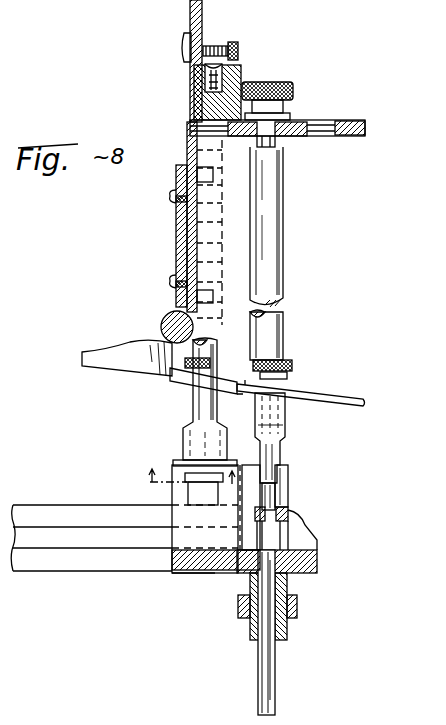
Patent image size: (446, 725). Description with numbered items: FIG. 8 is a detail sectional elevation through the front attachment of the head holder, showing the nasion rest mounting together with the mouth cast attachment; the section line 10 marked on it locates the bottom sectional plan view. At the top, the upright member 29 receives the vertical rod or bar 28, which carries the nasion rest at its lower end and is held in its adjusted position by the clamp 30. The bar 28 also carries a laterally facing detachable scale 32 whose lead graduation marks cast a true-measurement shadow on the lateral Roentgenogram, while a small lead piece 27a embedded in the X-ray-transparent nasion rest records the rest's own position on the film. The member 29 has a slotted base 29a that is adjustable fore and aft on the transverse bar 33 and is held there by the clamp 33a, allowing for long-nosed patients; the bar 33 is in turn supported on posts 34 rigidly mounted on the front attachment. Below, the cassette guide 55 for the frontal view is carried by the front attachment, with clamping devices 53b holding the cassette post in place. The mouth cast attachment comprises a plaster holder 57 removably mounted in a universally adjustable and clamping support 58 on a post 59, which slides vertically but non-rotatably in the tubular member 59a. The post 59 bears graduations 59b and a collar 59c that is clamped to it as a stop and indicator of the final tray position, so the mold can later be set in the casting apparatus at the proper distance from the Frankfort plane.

The member 29 is at (203, 27).
The clamp 30 is at (237, 44).
The clamp 33a is at (265, 82).
The slotted base 29a is at (340, 120).
The transverse bar 33 is at (303, 137).
The posts 34 is at (270, 234).
The detachable scale 32 is at (175, 238).
The rod or bar 28 is at (176, 310).
The lead piece 27a is at (160, 327).
The plaster holder 57 is at (128, 370).
The universally adjustable and clamping support 58 is at (287, 383).
The clamping devices 53b is at (187, 474).
The post 59 is at (280, 456).
The graduations 59b is at (283, 494).
The collar 59c is at (253, 512).
The tubular member 59a is at (317, 557).
The guide 55 is at (182, 490).
The section line 10 is at (188, 486).